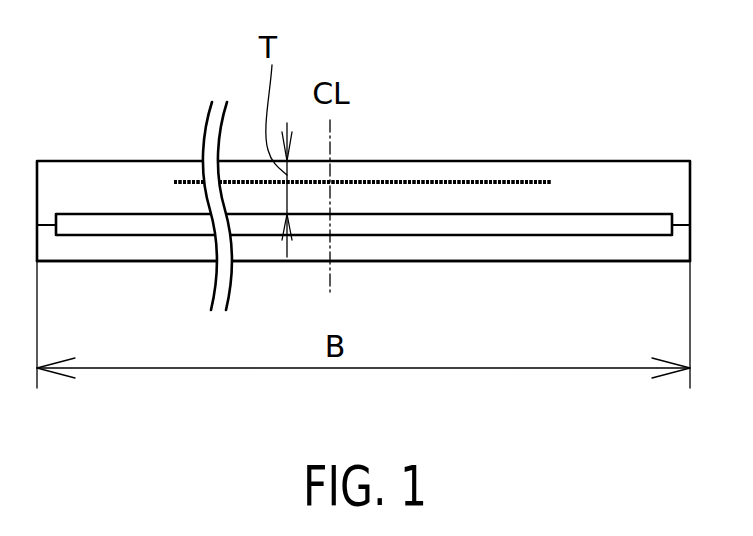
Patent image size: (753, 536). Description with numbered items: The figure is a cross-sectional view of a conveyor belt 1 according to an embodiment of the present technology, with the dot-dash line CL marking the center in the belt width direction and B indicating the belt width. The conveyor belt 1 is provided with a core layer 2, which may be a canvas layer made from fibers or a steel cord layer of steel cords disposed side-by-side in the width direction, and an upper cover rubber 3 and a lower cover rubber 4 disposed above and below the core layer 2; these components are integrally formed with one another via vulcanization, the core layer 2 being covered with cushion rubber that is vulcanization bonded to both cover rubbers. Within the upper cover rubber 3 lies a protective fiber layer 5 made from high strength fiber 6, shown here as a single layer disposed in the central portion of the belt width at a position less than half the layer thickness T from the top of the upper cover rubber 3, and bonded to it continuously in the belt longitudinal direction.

The conveyor belt 1 is at (457, 153).
The core layer 2 is at (397, 234).
The upper cover rubber 3 is at (605, 185).
The lower cover rubber 4 is at (523, 248).
The protective fiber layer 5 is at (517, 181).
The high strength fiber 6 is at (411, 183).